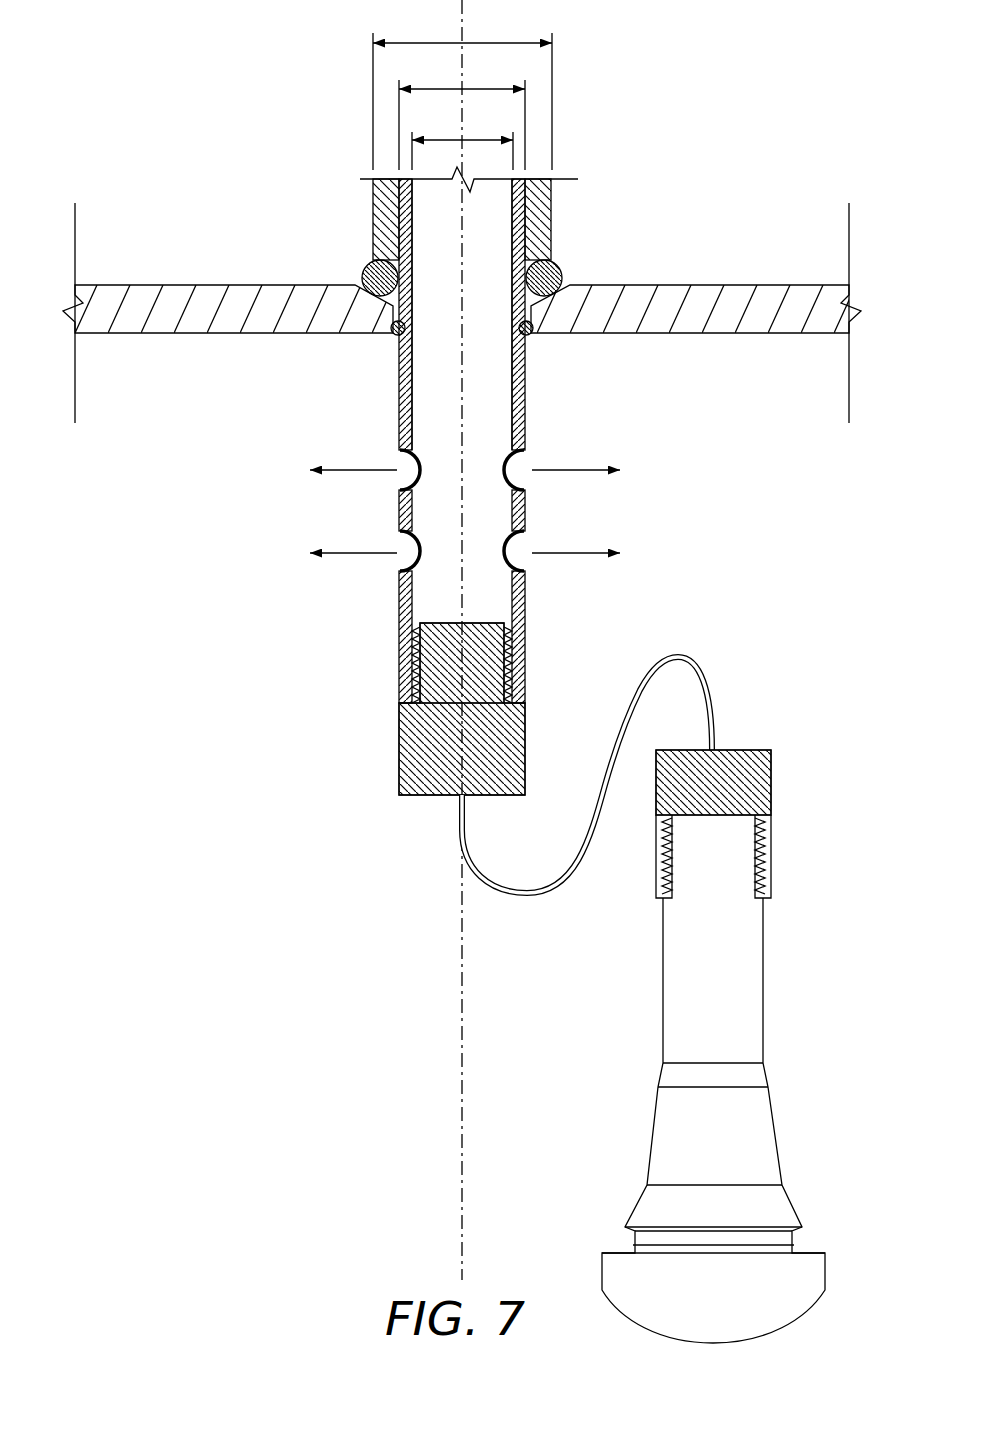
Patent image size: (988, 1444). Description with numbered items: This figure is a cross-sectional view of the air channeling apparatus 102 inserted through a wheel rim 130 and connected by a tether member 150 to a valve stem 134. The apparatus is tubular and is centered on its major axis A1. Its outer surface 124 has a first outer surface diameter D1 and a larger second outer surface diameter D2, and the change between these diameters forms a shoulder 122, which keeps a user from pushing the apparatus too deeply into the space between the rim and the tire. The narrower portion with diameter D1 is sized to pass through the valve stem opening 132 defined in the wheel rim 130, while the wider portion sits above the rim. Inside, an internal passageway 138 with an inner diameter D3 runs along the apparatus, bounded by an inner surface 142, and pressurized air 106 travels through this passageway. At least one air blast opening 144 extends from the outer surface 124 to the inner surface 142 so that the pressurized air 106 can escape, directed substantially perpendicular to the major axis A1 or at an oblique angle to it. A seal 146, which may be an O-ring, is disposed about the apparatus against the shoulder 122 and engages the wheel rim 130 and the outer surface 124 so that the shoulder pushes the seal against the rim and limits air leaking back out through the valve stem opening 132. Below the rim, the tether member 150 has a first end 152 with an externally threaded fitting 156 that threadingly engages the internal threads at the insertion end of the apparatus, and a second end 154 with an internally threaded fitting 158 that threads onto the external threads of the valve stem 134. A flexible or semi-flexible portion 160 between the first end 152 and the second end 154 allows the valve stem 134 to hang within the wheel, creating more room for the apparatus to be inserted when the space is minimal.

The air channeling apparatus 102 is at (385, 388).
The pressurized air 106 is at (365, 553).
The shoulder 122 is at (552, 262).
The outer surface 124 is at (527, 423).
The wheel rim 130 is at (737, 285).
The valve stem opening 132 is at (355, 280).
The valve stem 134 is at (773, 1108).
The internal passageway 138 is at (435, 413).
The inner surface 142 is at (527, 377).
The air blast opening 144 is at (518, 475).
The seal 146 is at (560, 272).
The tether member 150 is at (435, 827).
The first end 152 is at (398, 763).
The second end 154 is at (772, 792).
The fitting 156 is at (510, 728).
The fitting 158 is at (747, 765).
The flexible or semi-flexible portion 160 is at (582, 858).
The first outer surface diameter D1 is at (428, 88).
The second outer surface diameter D2 is at (423, 43).
The inner diameter D3 is at (440, 140).
The major axis A1 is at (465, 33).